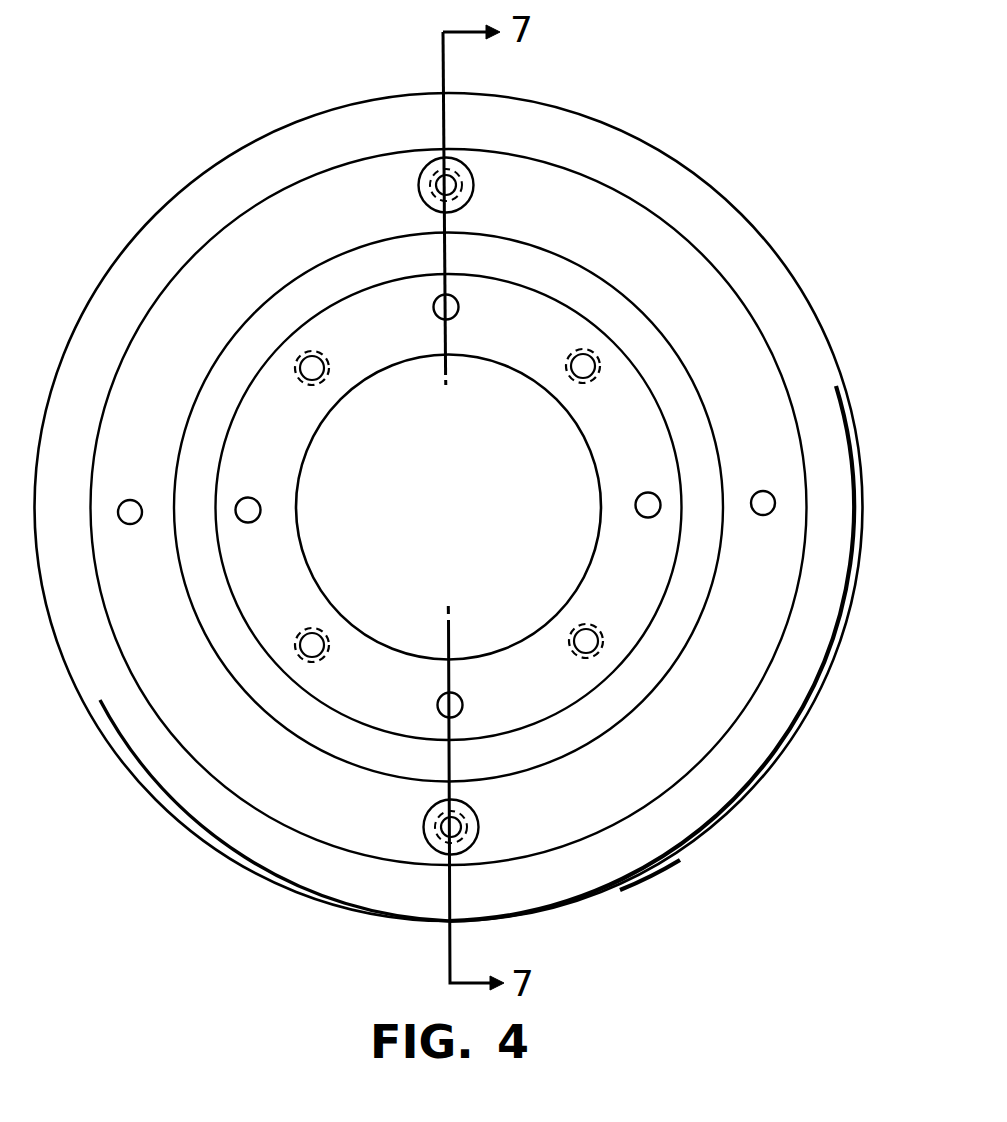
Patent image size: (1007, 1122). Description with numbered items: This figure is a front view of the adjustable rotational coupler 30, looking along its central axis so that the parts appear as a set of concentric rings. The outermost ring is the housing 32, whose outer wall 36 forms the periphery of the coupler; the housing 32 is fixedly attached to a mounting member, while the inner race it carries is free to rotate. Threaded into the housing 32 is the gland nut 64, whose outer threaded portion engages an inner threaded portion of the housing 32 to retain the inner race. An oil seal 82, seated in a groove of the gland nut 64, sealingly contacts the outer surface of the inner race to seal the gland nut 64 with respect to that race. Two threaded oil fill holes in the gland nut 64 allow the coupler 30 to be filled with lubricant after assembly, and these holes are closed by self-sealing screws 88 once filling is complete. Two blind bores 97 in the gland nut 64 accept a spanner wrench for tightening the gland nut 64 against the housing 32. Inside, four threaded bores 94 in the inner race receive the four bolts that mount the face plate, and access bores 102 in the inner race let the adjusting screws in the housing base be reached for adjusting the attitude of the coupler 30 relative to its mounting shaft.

The adjustable rotational coupler 30 is at (672, 150).
The housing 32 is at (847, 625).
The outer wall 36 is at (777, 712).
The gland nut 64 is at (772, 390).
The oil seal 82 is at (636, 322).
The self-sealing screws 88 is at (466, 188).
The threaded bores 94 is at (302, 375).
The blind bores 97 is at (130, 522).
The access bores 102 is at (455, 307).